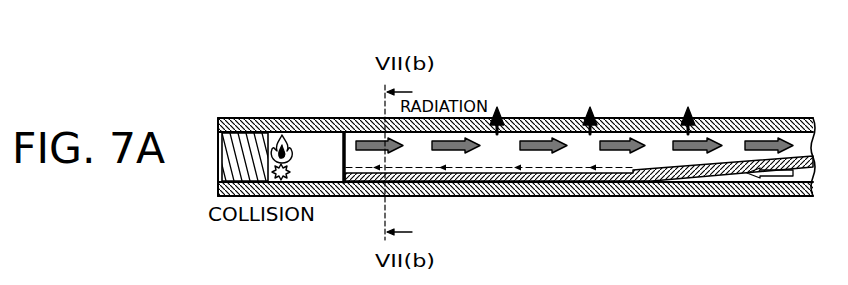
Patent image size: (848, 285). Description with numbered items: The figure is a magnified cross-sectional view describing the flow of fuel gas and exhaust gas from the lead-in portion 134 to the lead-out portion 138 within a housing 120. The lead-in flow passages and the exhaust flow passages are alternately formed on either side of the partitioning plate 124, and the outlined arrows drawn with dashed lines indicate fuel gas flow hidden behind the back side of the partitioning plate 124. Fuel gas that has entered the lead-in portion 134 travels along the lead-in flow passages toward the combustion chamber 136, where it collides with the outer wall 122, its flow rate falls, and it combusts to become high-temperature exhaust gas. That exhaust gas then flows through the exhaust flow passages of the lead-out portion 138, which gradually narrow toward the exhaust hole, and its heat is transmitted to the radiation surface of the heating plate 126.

The housing bottom wall 120 is at (525, 196).
The outer wall 122 is at (218, 150).
The partitioning plate 124 is at (335, 173).
The heating plate 126 is at (528, 117).
The lead-in portion 134 is at (735, 176).
The combustion chamber 136 is at (322, 167).
The lead-out portion 138 is at (659, 160).